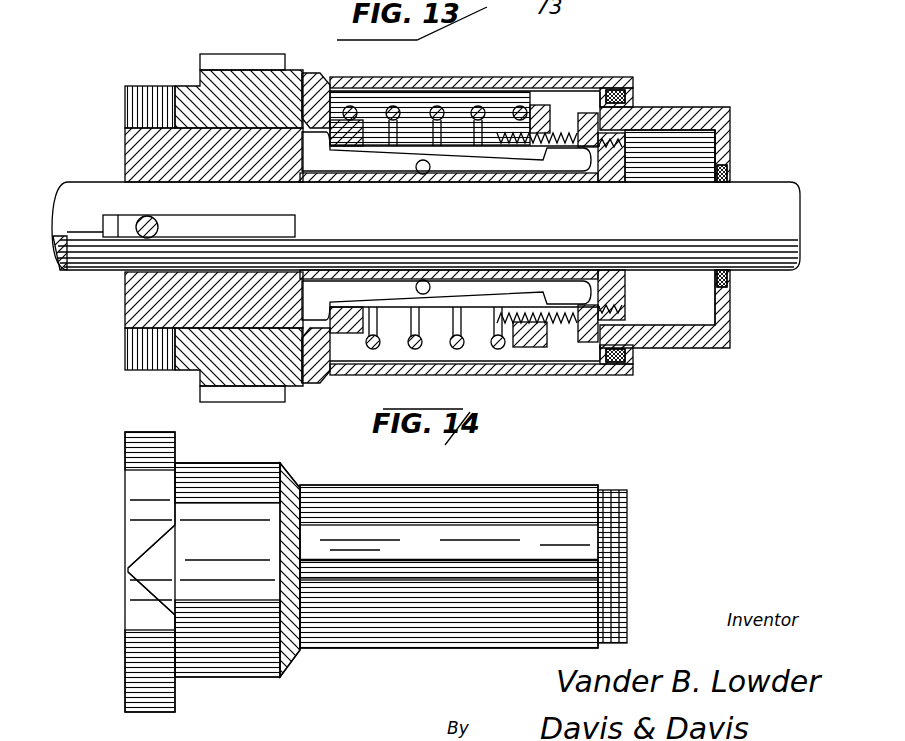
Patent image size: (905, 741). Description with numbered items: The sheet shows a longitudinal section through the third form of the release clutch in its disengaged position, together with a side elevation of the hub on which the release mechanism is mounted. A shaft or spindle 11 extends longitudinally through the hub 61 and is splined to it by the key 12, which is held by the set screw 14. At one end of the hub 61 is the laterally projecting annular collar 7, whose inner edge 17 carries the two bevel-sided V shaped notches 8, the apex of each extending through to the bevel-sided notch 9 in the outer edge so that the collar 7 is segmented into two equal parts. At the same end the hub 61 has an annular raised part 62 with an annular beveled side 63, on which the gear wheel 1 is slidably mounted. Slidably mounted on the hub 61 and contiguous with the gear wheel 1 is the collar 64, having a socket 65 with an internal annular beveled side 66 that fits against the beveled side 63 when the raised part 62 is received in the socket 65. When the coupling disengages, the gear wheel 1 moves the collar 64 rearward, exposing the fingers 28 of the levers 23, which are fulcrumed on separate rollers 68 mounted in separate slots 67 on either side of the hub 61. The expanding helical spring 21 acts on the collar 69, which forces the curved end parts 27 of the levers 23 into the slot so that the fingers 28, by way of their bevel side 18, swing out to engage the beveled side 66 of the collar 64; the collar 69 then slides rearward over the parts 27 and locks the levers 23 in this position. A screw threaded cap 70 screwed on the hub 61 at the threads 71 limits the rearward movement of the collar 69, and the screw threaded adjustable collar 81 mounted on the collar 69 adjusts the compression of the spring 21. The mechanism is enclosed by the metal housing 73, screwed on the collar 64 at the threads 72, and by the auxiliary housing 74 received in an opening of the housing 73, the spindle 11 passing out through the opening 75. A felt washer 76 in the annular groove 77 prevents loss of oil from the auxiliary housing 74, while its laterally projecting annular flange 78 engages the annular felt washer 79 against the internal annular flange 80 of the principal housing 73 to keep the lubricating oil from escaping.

In FIG. 13, the gear wheel 1 is at (225, 82).
In FIG. 13, the spindle 11 is at (103, 188).
In FIG. 13, the key 12 is at (128, 238).
In FIG. 13, the set screw 14 is at (147, 240).
In FIG. 13, the bevel side 18 is at (313, 130).
In FIG. 13, the expanding helical spring 21 is at (485, 163).
In FIG. 13, the locking levers 23 is at (472, 112).
In FIG. 13, the end members of levers 27 is at (589, 112).
In FIG. 13, the V shaped fingers 28 is at (364, 124).
In FIG. 13, the hub 61 is at (150, 306).
In FIG. 14, the hub 61 is at (433, 500).
In FIG. 14, the annular raised part 62 is at (238, 478).
In FIG. 13, the annular beveled side 63 is at (352, 72).
In FIG. 14, the annular beveled side 63 is at (300, 486).
In FIG. 13, the collar 64 is at (301, 73).
In FIG. 13, the socket 65 is at (333, 92).
In FIG. 13, the internal annular beveled side 66 is at (423, 159).
In FIG. 14, the slots 67 is at (475, 565).
In FIG. 13, the rollers 68 is at (440, 143).
In FIG. 13, the collar 69 is at (582, 118).
In FIG. 13, the screw threaded cap 70 is at (625, 316).
In FIG. 14, the screw threads 71 is at (616, 486).
In FIG. 13, the screw threads 72 is at (318, 366).
In FIG. 13, the metal housing 73 is at (538, 104).
In FIG. 13, the auxiliary housing 74 is at (722, 336).
In FIG. 13, the opening 75 is at (733, 272).
In FIG. 13, the felt washer 76 is at (728, 162).
In FIG. 13, the annular groove 77 is at (730, 172).
In FIG. 13, the laterally projecting annular flange 78 is at (626, 94).
In FIG. 13, the annular felt washer 79 is at (624, 97).
In FIG. 13, the internal annular flange 80 is at (632, 102).
In FIG. 13, the screw threaded adjustable collar 81 is at (598, 150).
In FIG. 14, the annular collar 7 is at (142, 450).
In FIG. 14, the V shaped notches 8 is at (158, 545).
In FIG. 14, the bevel-sided notch 9 is at (130, 574).
In FIG. 14, the inner edge 17 is at (177, 462).